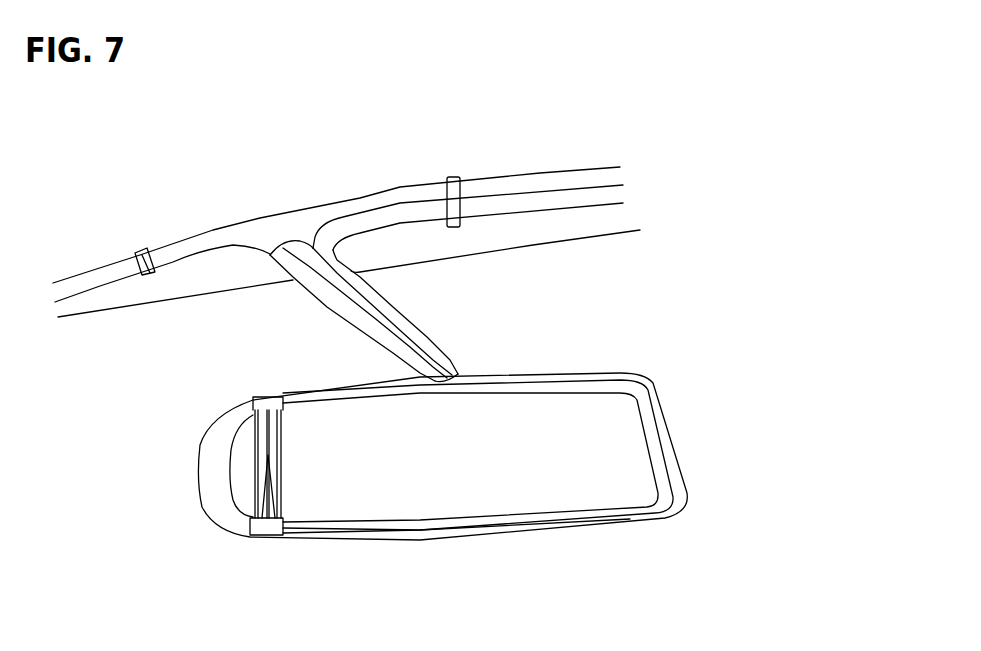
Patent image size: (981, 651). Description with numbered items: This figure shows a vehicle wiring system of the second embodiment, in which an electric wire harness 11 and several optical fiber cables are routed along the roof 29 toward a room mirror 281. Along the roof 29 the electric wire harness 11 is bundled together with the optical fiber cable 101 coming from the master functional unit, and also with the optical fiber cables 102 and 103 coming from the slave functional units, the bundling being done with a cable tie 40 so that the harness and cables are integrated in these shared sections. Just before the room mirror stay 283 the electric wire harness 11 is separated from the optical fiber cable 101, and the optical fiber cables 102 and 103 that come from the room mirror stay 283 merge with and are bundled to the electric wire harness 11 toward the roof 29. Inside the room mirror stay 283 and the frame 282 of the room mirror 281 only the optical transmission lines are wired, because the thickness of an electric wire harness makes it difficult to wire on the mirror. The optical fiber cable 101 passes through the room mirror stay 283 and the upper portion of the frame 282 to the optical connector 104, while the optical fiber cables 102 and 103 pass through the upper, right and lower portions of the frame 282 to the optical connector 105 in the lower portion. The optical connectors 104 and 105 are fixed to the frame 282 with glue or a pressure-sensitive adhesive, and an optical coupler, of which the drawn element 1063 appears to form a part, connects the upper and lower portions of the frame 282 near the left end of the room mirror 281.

The electric wire harness 11 is at (117, 262).
The optical fiber cable 101 is at (172, 258).
The roof 29 is at (107, 308).
The cable tie 40 is at (458, 177).
The optical fiber cable 102 is at (478, 195).
The optical fiber cable 103 is at (555, 213).
The room mirror stay 283 is at (420, 328).
The room mirror 281 is at (320, 410).
The frame 282 is at (345, 377).
The optical connector 104 is at (252, 405).
The optical connector 105 is at (248, 533).
The harness holder 1063 is at (253, 463).